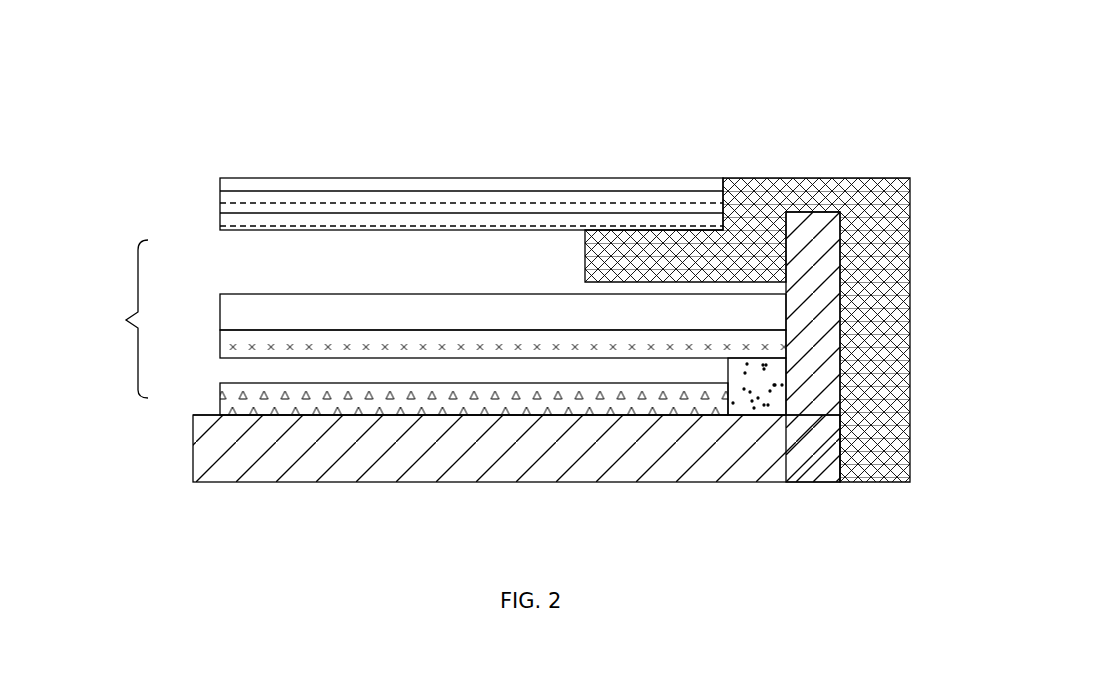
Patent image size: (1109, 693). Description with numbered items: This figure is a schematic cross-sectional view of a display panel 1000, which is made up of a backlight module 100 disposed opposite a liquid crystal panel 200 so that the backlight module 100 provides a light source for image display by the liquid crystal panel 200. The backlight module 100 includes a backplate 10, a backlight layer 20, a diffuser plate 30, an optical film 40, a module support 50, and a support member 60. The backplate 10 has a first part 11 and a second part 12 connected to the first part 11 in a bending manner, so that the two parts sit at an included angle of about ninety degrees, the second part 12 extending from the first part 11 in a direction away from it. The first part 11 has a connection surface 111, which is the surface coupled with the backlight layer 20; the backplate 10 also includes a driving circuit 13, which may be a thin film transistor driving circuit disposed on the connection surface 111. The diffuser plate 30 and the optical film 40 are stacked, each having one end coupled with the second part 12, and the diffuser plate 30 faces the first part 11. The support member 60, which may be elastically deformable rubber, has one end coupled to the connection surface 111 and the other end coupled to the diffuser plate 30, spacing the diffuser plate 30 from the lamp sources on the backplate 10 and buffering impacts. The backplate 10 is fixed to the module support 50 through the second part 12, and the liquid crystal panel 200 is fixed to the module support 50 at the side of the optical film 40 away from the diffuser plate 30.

The display panel 1000 is at (122, 109).
The liquid crystal panel 200 is at (257, 207).
The backlight module 100 is at (112, 319).
The support member 60 is at (948, 318).
The module support 50 is at (948, 461).
The optical film 40 is at (237, 312).
The diffuser plate 30 is at (237, 348).
The backlight layer 20 is at (235, 403).
The backplate 10 is at (495, 463).
The first part 11 is at (516, 474).
The driving circuit 13 is at (532, 443).
The connection surface 111 is at (593, 417).
The second part 12 is at (908, 222).